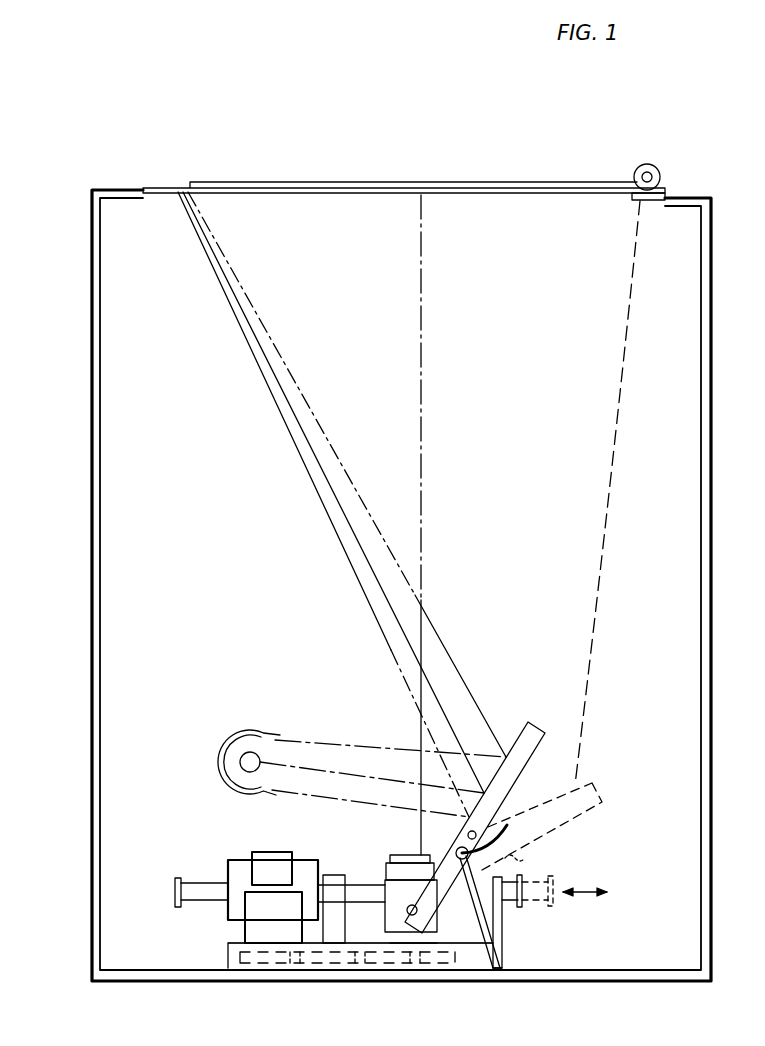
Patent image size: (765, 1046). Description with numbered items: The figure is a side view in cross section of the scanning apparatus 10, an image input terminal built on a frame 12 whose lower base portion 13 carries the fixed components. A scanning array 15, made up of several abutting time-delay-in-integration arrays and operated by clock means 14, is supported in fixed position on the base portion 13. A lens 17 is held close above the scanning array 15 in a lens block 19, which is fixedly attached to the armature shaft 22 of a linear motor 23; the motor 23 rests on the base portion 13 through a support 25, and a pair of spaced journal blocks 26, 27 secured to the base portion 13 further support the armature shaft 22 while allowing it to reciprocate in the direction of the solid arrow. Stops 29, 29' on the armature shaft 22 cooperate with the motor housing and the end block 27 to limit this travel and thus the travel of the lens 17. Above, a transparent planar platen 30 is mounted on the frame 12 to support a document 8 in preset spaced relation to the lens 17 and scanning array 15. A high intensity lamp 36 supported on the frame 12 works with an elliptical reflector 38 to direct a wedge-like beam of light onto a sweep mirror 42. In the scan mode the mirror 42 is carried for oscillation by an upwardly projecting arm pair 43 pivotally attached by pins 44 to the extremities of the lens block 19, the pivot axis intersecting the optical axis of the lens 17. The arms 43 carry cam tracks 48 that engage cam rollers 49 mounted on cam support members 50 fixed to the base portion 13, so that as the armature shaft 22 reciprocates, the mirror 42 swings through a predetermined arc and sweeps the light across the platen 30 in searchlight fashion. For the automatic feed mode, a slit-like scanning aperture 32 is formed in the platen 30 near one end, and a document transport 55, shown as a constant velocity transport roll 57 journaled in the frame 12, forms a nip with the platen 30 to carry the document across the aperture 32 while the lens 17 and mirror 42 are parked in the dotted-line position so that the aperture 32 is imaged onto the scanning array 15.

The document 8 is at (288, 182).
The scanning apparatus 10 is at (262, 469).
The frame 12 is at (91, 552).
The base portion 13 is at (472, 993).
The clock means 14 is at (268, 958).
The scanning array 15 is at (415, 950).
The lens 17 is at (398, 854).
The lens block 19 is at (382, 882).
The armature shaft 22 is at (527, 903).
The linear motor 23 is at (240, 856).
The support 25 is at (245, 928).
The journal block 26 is at (327, 873).
The end block 27 is at (500, 930).
The stop 29 is at (536, 875).
The stop 29' is at (178, 885).
The platen 30 is at (178, 196).
The scanning aperture 32 is at (641, 202).
The lamp 36 is at (262, 758).
The elliptical reflector 38 is at (226, 746).
The sweep mirror 42 is at (539, 714).
The arm pair 43 is at (483, 910).
The pins 44 is at (408, 918).
The cam tracks 48 is at (468, 833).
The cam rollers 49 is at (503, 830).
The cam support members 50 is at (497, 907).
The document transport 55 is at (630, 156).
The C.V.T. roll 57 is at (658, 170).